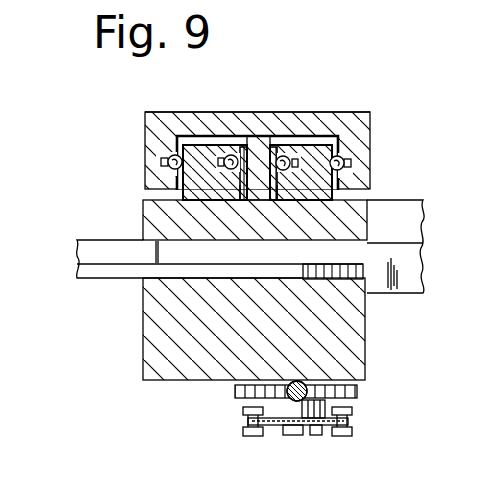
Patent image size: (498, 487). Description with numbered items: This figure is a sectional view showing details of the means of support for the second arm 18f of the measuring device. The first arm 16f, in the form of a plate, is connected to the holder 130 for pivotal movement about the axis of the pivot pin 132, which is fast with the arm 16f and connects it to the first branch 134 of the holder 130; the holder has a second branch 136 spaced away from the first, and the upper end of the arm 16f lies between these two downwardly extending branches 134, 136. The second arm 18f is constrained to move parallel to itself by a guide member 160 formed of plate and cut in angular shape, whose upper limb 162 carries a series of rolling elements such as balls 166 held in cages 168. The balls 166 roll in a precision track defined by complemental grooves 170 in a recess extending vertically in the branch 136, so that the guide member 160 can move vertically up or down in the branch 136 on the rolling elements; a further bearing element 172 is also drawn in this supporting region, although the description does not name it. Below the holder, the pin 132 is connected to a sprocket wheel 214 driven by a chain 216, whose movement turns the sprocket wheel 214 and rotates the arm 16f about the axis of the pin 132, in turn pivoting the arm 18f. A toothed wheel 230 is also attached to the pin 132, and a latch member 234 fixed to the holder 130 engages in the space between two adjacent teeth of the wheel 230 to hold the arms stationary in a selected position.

The holder 130 is at (320, 112).
The pivot pin 132 is at (297, 431).
The first branch 134 is at (350, 347).
The second branch 136 is at (360, 145).
The guide member 160 is at (415, 207).
The upper limb 162 is at (142, 198).
The balls 166 is at (256, 200).
The cages 168 is at (292, 148).
The complemental grooves 170 is at (161, 162).
The inner ball bearing 172 is at (231, 148).
The second arm 18f is at (100, 243).
The first arm 16f is at (313, 276).
The wheel 230 is at (358, 392).
The latch member 234 is at (237, 397).
The sprocket wheel 214 is at (340, 440).
The chain 216 is at (245, 422).